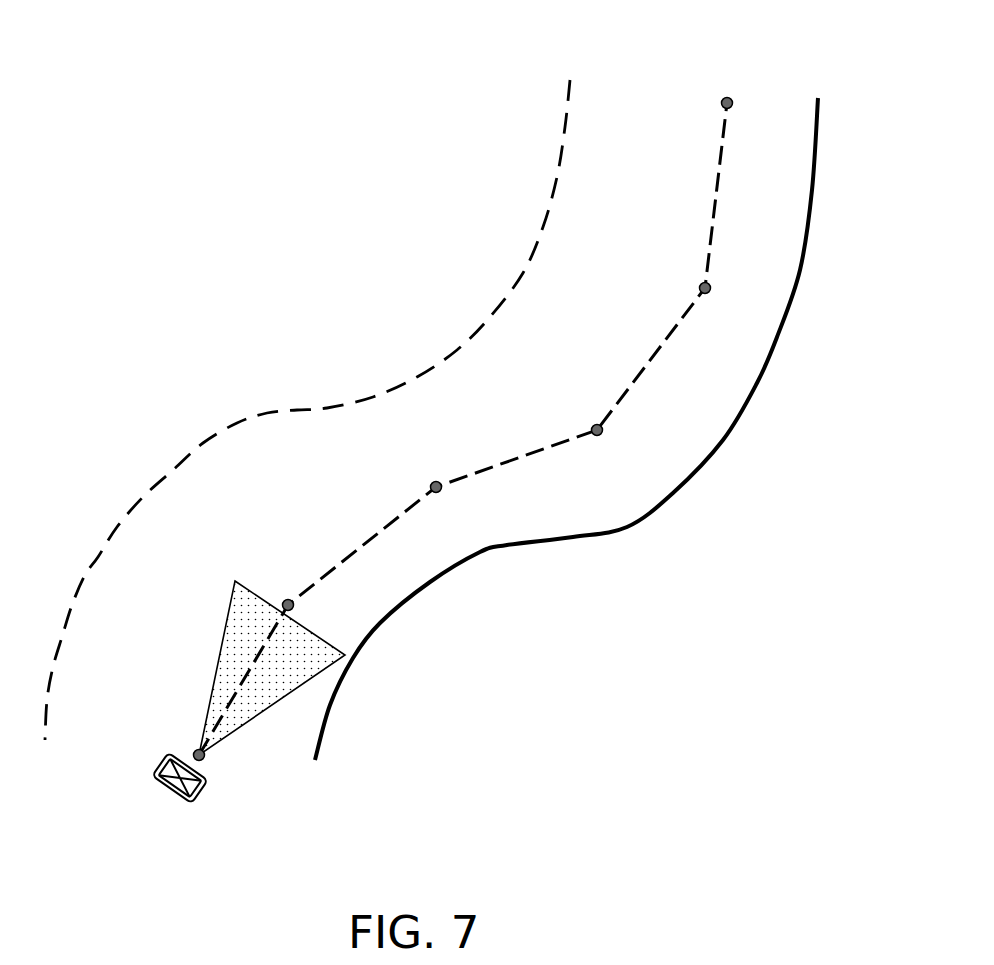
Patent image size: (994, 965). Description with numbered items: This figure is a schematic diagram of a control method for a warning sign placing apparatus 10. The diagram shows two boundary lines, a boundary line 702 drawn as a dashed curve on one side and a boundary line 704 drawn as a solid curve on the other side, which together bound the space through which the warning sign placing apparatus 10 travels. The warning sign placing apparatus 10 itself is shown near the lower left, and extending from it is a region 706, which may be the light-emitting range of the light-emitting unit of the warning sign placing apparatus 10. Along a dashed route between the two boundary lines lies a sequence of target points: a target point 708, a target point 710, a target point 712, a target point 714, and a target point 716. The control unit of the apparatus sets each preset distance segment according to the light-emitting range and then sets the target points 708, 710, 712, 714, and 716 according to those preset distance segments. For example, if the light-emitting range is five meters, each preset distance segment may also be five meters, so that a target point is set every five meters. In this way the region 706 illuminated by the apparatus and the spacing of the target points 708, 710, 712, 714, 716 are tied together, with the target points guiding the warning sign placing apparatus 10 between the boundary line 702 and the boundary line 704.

The warning sign placing apparatus 10 is at (193, 787).
The boundary line 702 is at (287, 408).
The boundary line 704 is at (326, 708).
The region 706 is at (230, 643).
The target point 708 is at (289, 604).
The target point 710 is at (436, 487).
The target point 712 is at (597, 430).
The target point 714 is at (705, 288).
The target point 716 is at (727, 103).